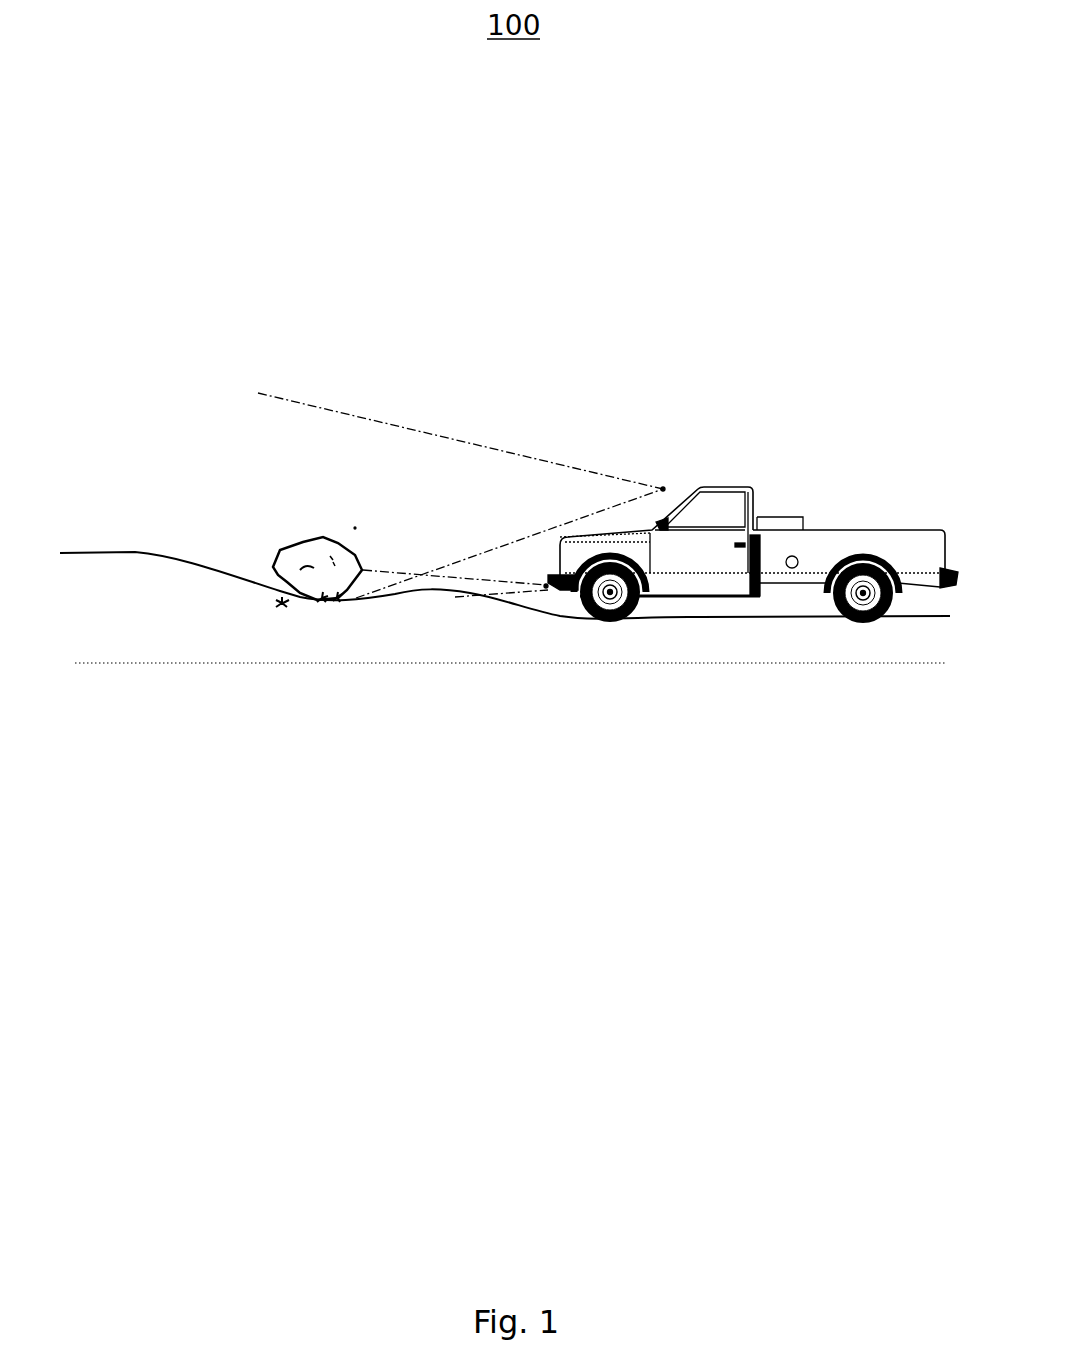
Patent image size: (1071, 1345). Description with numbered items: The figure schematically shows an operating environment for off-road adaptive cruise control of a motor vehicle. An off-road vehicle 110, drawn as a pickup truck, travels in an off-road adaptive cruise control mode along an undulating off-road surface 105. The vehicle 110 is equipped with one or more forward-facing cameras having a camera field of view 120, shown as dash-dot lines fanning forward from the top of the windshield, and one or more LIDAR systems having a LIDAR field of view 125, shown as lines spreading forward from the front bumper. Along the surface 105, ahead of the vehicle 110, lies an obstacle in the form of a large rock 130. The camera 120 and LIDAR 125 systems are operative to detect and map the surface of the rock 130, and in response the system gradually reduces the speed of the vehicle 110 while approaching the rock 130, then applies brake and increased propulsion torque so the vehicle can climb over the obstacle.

The off-road surface 105 is at (133, 569).
The off-road vehicle 110 is at (853, 499).
The camera field of view 120 is at (664, 475).
The LIDAR field of view 125 is at (544, 569).
The large rock 130 is at (282, 542).